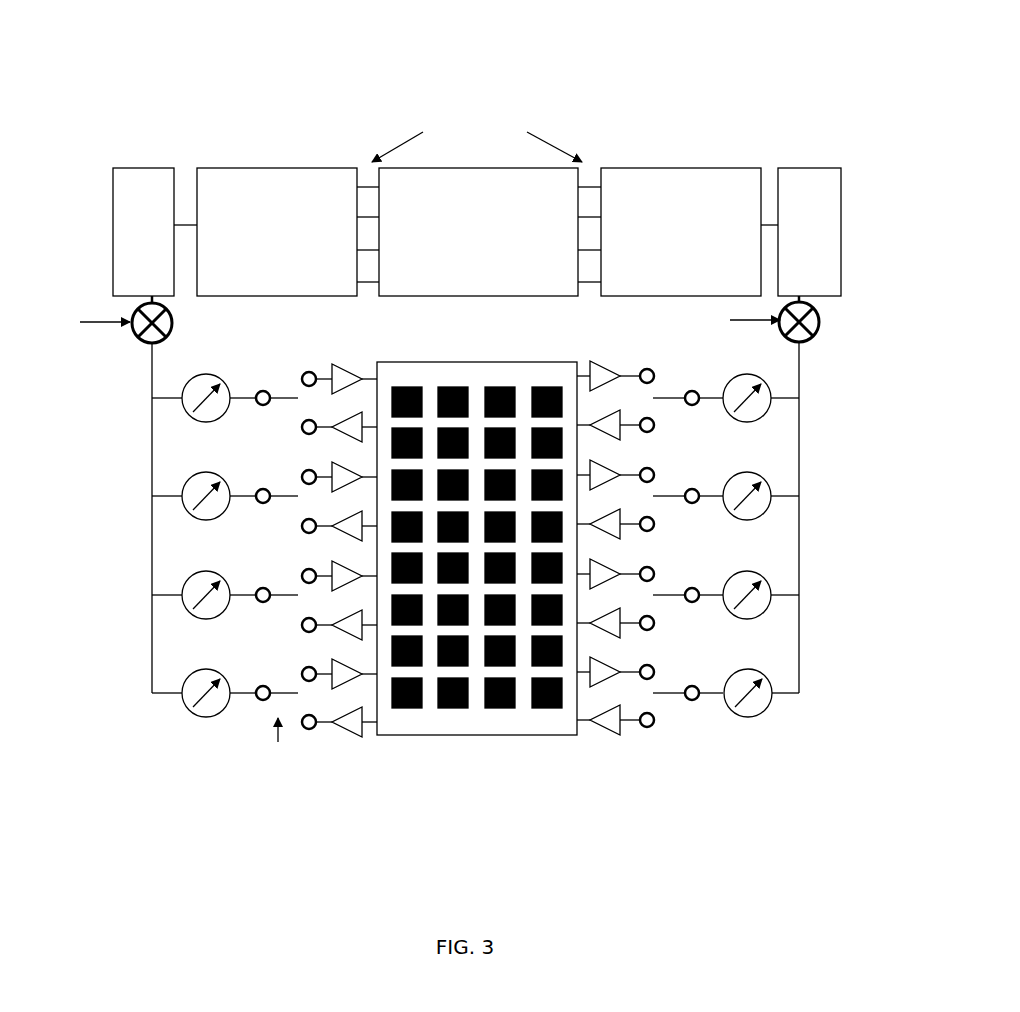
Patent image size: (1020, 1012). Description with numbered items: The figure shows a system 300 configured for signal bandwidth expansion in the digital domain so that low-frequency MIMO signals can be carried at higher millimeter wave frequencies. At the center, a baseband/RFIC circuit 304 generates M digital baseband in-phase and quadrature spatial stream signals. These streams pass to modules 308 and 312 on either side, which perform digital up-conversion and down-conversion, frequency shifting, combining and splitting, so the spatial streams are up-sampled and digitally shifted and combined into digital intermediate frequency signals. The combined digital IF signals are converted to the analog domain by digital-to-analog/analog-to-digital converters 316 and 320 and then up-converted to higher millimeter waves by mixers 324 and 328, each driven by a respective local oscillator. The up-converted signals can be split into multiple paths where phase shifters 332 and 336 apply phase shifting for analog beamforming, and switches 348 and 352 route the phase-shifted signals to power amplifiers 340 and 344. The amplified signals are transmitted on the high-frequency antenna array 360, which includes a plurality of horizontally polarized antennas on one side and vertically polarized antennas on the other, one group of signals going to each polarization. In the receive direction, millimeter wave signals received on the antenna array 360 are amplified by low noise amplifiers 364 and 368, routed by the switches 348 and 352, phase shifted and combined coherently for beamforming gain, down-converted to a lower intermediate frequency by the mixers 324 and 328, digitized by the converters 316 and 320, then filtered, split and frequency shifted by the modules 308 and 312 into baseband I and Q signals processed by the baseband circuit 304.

The system 300 is at (470, 32).
The baseband/RFIC circuit 304 is at (528, 177).
The module 308 is at (275, 162).
The module 312 is at (660, 167).
The digital-to-analog/analog-to-digital converter 316 is at (157, 166).
The digital-to-analog/analog-to-digital converter 320 is at (813, 172).
The mixer 324 is at (130, 328).
The mixer 328 is at (815, 337).
The phase shifter 332 is at (190, 703).
The phase shifter 336 is at (753, 707).
The power amplifier 340 is at (340, 368).
The power amplifier 344 is at (623, 732).
The switch 348 is at (297, 395).
The switch 352 is at (658, 395).
The high-frequency antenna array 360 is at (522, 723).
The low noise amplifier 364 is at (347, 737).
The low noise amplifier 368 is at (603, 365).